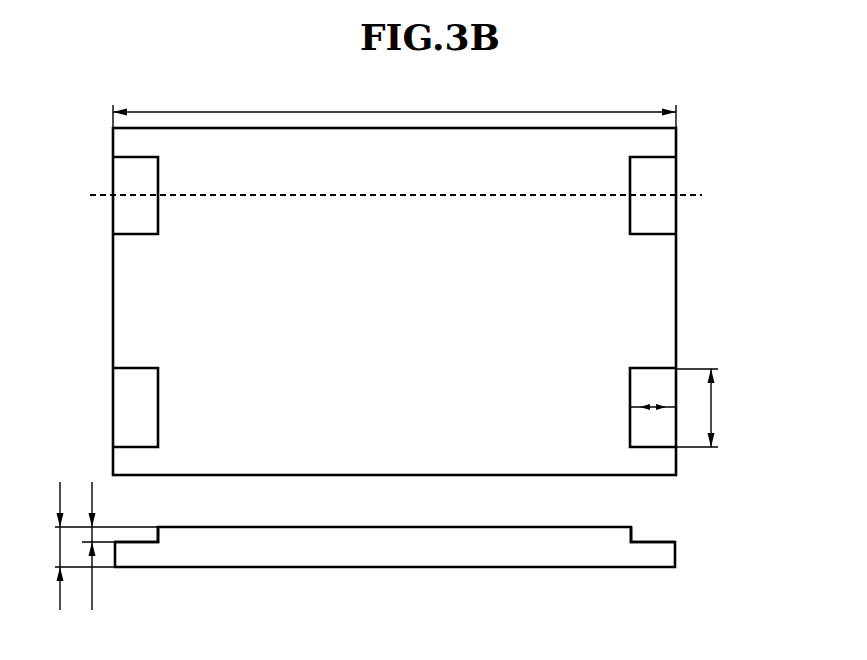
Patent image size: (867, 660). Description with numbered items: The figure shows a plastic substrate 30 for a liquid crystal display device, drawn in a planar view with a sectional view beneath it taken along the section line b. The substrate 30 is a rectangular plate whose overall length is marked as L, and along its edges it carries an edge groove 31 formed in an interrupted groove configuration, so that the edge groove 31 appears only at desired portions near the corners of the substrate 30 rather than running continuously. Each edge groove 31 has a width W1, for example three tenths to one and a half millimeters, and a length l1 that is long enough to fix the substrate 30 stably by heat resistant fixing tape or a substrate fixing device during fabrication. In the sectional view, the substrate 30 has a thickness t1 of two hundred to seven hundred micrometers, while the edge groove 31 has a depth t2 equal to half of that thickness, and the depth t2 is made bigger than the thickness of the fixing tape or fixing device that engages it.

The plastic substrate 30 is at (676, 142).
The edge groove 31 is at (660, 220).
The length dimension L is at (394, 108).
The width of edge groove W1 is at (653, 396).
The length of edge groove l1 is at (709, 408).
The thickness of substrate t1 is at (105, 559).
The depth of edge groove t2 is at (98, 559).
The section line b-b' b is at (398, 371).